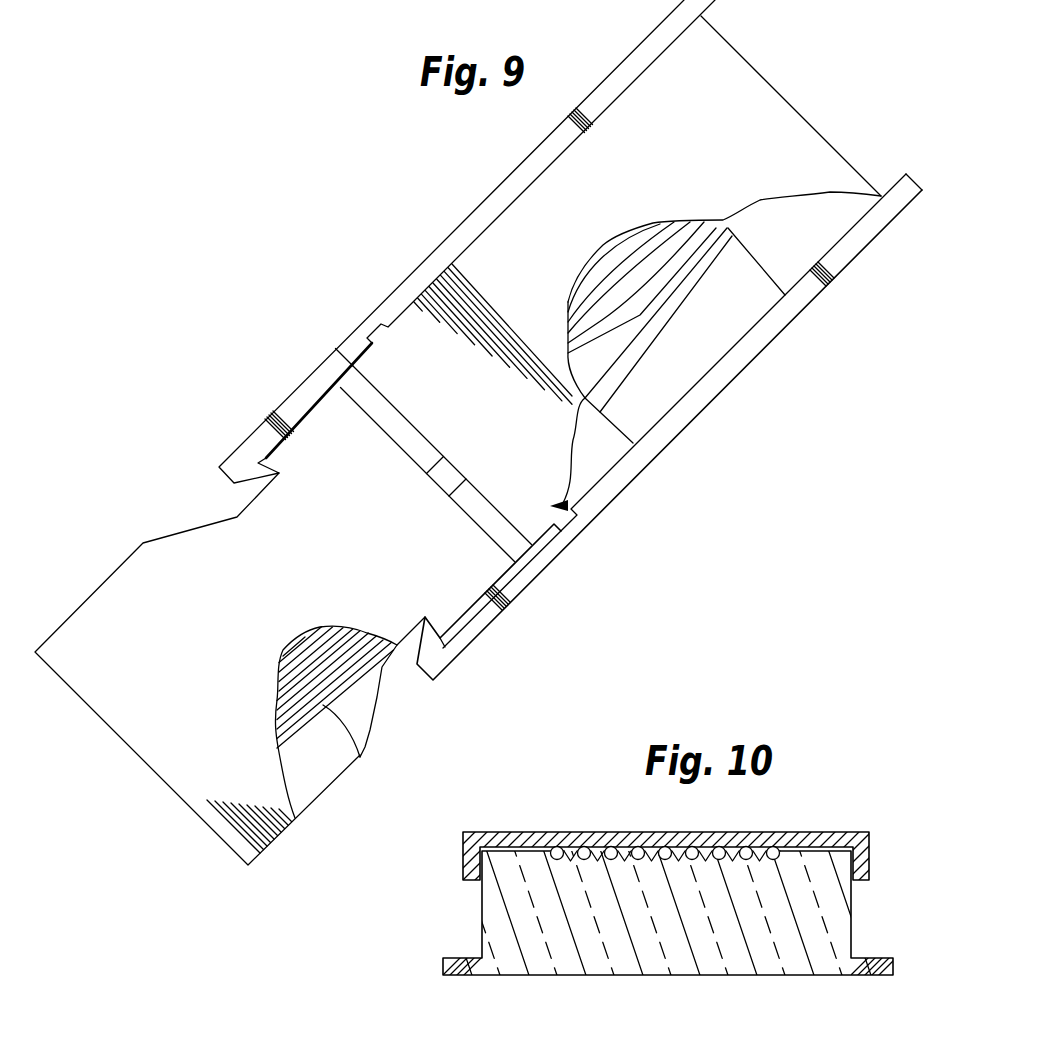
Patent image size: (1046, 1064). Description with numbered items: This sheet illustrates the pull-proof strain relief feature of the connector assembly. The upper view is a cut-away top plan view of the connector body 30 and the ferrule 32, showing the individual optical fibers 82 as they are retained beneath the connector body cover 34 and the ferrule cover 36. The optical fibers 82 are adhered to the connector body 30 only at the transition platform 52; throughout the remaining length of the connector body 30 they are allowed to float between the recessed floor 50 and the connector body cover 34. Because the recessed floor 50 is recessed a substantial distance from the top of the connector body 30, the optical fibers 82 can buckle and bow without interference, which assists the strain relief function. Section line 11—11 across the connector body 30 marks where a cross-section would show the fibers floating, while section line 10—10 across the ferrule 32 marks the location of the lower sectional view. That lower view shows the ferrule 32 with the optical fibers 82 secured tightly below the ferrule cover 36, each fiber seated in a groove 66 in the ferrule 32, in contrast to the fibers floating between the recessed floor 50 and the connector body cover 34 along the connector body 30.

In FIG. 9, the section line 10- 10 is at (45, 600).
In FIG. 9, the section line 11- 11 is at (415, 213).
In FIG. 9, the connector body 30 is at (570, 509).
In FIG. 9, the ferrule 32 is at (394, 699).
In FIG. 10, the ferrule 32 is at (847, 932).
In FIG. 9, the connector body cover 34 is at (508, 449).
In FIG. 9, the ferrule cover 36 is at (209, 614).
In FIG. 10, the ferrule cover 36 is at (873, 857).
In FIG. 9, the recessed floor 50 is at (692, 368).
In FIG. 9, the transition platform 52 is at (822, 242).
In FIG. 10, the V-groove 66 is at (733, 855).
In FIG. 9, the optical fibers 82 is at (718, 279).
In FIG. 10, the optical fibers 82 is at (638, 846).